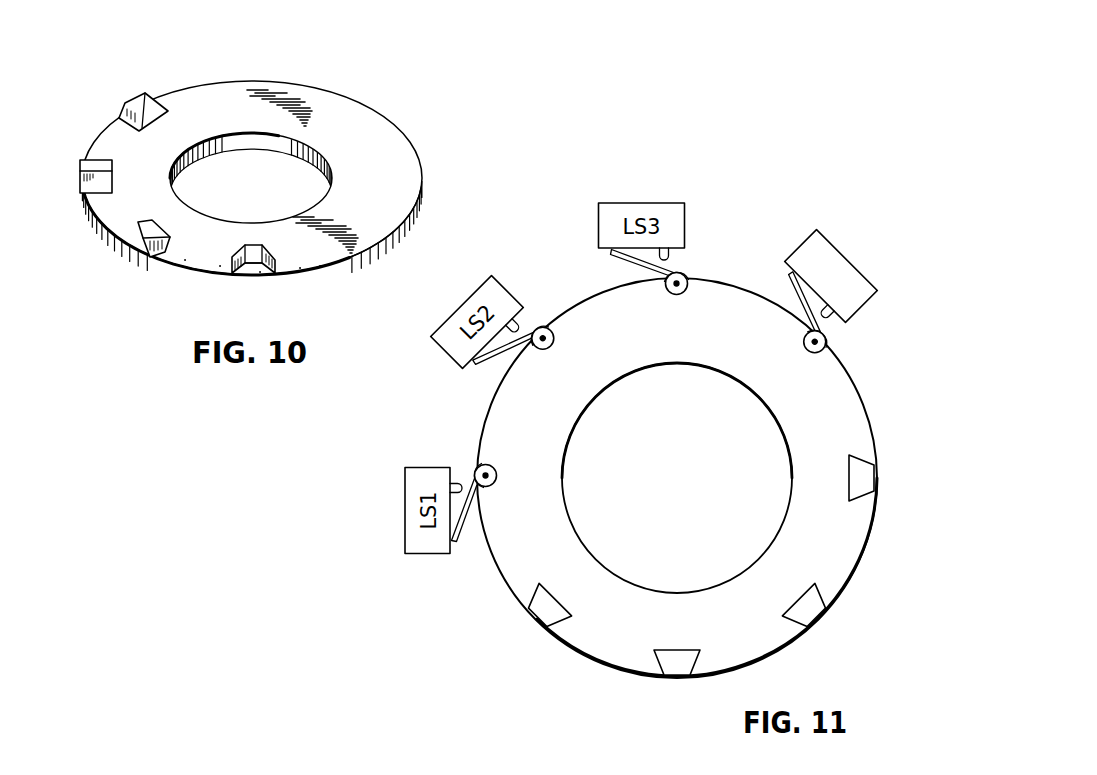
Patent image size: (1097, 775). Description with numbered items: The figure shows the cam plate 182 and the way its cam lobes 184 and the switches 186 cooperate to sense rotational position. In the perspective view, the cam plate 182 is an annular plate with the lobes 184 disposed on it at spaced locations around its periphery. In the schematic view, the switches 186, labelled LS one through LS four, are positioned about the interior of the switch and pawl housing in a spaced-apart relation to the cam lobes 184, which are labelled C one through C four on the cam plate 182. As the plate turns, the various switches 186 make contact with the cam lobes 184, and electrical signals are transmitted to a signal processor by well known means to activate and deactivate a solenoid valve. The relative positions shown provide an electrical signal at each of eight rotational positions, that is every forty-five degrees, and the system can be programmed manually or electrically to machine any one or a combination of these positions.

In FIG. 10, the cam plate 182 is at (393, 146).
In FIG. 11, the cam plate 182 is at (823, 408).
In FIG. 10, the cam lobes 184 is at (147, 102).
In FIG. 11, the cam lobes 184 is at (530, 603).
In FIG. 11, the switches 186 is at (833, 229).